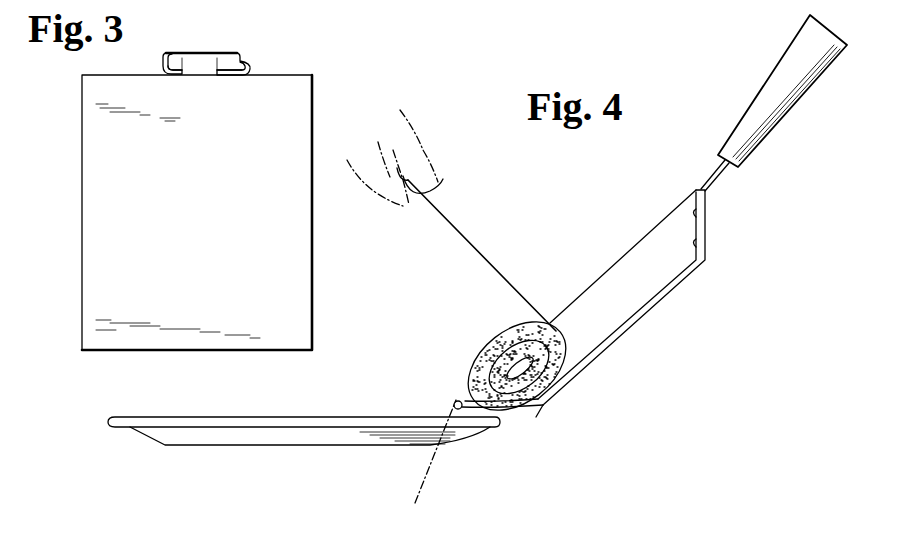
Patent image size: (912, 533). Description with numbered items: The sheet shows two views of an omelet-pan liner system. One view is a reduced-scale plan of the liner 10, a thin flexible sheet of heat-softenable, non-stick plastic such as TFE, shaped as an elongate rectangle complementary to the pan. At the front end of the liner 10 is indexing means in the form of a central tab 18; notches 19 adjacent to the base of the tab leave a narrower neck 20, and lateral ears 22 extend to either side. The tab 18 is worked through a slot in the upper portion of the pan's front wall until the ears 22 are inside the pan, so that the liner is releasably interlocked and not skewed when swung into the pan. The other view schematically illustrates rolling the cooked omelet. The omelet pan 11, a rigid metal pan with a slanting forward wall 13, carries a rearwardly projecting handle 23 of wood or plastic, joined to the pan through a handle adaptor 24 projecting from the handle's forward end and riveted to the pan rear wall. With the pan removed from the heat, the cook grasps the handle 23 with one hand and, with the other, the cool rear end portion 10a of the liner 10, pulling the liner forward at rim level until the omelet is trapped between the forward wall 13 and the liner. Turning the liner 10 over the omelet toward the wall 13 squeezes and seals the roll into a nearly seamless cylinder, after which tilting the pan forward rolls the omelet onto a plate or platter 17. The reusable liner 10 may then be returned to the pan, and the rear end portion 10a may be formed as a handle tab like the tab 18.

In FIG. 3, the liner 10 is at (84, 192).
In FIG. 4, the liner 10 is at (498, 265).
In FIG. 4, the rear end portion of the liner 10a is at (396, 172).
In FIG. 4, the omelet pan 11 is at (640, 312).
In FIG. 4, the forward wall 13 is at (512, 415).
In FIG. 4, the plate or platter 17 is at (398, 446).
In FIG. 3, the central tab 18 is at (200, 51).
In FIG. 3, the notches 19 is at (170, 74).
In FIG. 3, the neck 20 is at (200, 73).
In FIG. 3, the lateral ears 22 is at (163, 51).
In FIG. 4, the handle 23 is at (778, 63).
In FIG. 4, the handle adaptor 24 is at (713, 183).